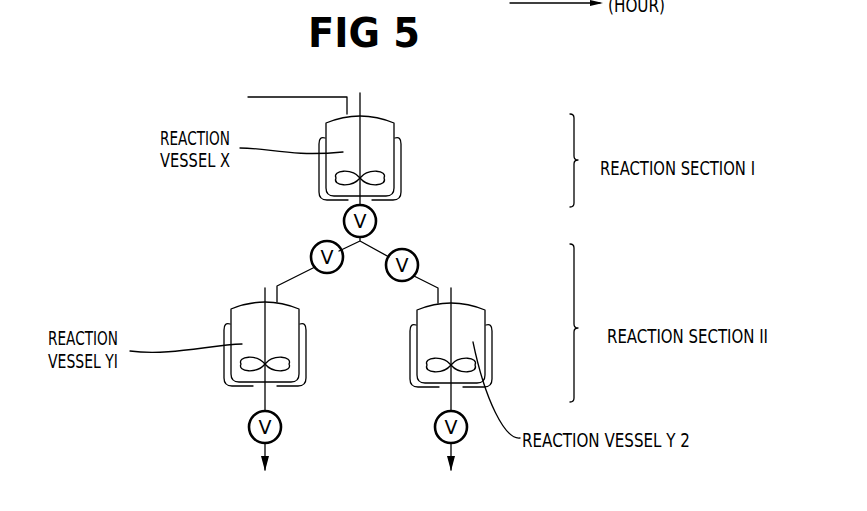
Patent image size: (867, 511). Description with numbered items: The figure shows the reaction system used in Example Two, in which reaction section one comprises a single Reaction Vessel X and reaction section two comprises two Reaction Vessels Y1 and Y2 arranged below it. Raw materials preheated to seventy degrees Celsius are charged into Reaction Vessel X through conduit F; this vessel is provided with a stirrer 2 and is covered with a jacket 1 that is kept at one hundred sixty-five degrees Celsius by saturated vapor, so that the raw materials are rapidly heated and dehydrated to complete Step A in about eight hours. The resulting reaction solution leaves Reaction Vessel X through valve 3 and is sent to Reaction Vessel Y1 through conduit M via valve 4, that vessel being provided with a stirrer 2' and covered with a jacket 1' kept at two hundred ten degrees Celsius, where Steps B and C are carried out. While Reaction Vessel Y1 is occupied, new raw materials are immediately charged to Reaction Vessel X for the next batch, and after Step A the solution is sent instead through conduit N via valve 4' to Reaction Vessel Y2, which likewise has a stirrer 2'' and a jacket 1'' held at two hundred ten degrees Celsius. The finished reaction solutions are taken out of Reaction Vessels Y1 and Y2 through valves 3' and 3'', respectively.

The conduit F is at (297, 93).
The jacket 1 is at (371, 158).
The stirrer 2 is at (379, 148).
The valve 3 is at (347, 221).
The conduit N is at (366, 241).
The conduit M is at (355, 259).
The valve 4 is at (310, 271).
The valve 4' is at (417, 273).
The jacket 1' is at (277, 353).
The stirrer 2' is at (299, 349).
The valve 3' is at (278, 441).
The jacket 1'' is at (437, 356).
The stirrer 2'' is at (408, 349).
The valve 3'' is at (464, 441).